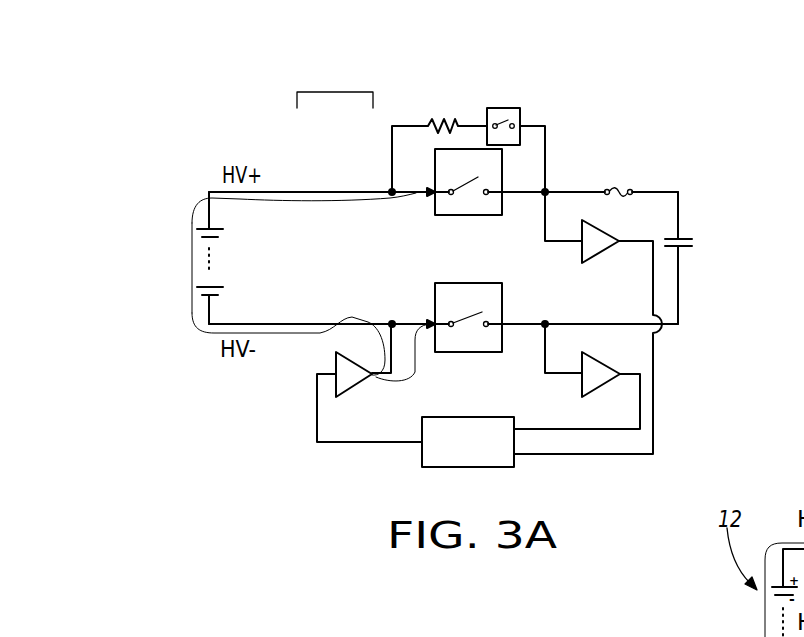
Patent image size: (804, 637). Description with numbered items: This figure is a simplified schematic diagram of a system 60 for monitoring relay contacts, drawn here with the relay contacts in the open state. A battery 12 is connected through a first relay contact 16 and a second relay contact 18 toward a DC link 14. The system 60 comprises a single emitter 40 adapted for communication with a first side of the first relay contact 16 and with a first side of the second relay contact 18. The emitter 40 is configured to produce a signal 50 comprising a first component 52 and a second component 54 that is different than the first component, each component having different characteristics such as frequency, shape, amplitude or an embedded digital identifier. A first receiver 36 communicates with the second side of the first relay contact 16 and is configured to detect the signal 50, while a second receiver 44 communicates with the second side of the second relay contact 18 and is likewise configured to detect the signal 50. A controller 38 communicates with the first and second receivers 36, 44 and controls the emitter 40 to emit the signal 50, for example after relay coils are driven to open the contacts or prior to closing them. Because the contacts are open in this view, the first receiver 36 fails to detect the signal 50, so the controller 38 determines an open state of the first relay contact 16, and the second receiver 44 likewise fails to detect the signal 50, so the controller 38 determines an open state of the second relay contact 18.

The high voltage battery 12 is at (177, 223).
The DC link capacitor 14 is at (690, 224).
The first relay contact 16 is at (465, 215).
The second relay contact 18 is at (503, 305).
The first receiver 36 is at (604, 230).
The controller 38 is at (422, 452).
The emitter 40 is at (352, 385).
The second receiver 44 is at (581, 388).
The signal 50 is at (335, 90).
The first component 52 is at (345, 313).
The second component 54 is at (408, 348).
The system 60 is at (464, 97).